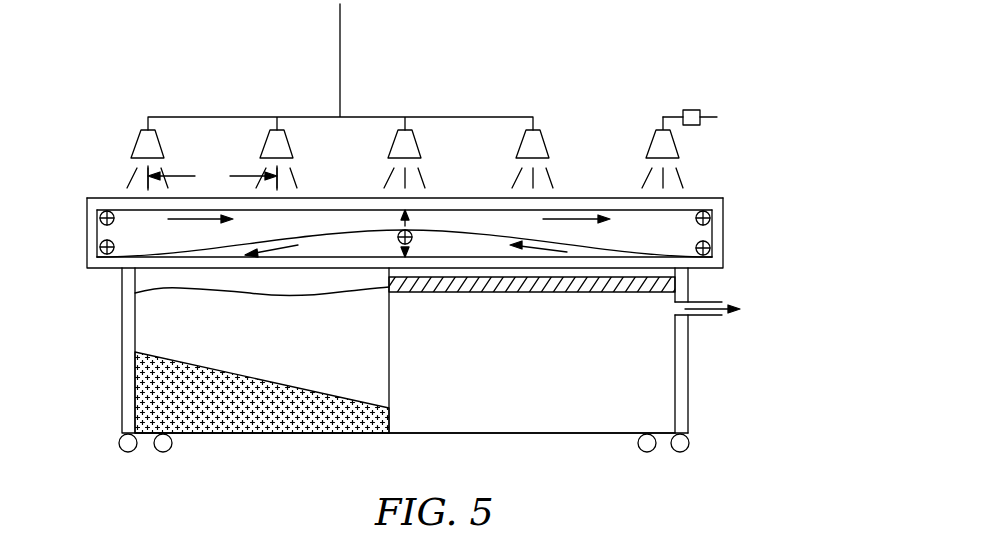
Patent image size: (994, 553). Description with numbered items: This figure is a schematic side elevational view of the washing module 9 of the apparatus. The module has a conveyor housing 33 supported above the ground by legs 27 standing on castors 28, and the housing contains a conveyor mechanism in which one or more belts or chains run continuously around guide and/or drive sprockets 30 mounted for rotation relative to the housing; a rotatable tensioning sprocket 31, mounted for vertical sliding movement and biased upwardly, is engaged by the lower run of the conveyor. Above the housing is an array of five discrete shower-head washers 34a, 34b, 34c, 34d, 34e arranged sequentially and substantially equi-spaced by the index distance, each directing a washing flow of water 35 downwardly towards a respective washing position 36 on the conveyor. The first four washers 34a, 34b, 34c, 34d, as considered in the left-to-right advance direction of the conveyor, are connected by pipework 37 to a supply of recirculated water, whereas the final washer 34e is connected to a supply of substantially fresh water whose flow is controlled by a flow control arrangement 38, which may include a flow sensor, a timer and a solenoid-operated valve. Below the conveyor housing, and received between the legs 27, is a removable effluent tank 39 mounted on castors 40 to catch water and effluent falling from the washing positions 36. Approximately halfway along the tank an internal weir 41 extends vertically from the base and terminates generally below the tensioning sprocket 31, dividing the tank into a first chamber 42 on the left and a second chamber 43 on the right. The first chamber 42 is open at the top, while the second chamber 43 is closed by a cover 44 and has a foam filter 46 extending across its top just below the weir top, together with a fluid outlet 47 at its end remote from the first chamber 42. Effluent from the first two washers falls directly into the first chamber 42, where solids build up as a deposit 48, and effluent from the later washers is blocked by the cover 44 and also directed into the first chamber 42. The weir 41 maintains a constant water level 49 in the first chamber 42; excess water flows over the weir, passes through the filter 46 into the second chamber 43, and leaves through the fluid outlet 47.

The washing module 9 is at (632, 58).
The legs 27 is at (688, 348).
The castors 28 is at (118, 450).
The guide and/or drive sprockets 30 is at (710, 218).
The tensioning sprocket 31 is at (410, 243).
The belt housing 33 is at (725, 242).
The first washer 34a is at (143, 143).
The second washer 34b is at (270, 148).
The third washer 34c is at (397, 148).
The fourth washer 34d is at (525, 148).
The final washer 34e is at (655, 148).
The washing flow of water 35 is at (131, 180).
The washing position 36 is at (678, 195).
The pipework 37 is at (307, 117).
The flow control arrangement 38 is at (700, 110).
The effluent tank 39 is at (367, 433).
The castors 40 is at (155, 453).
The internal weir 41 is at (392, 350).
The first chamber 42 is at (262, 377).
The second chamber 43 is at (532, 384).
The cover 44 is at (655, 263).
The filter 46 is at (617, 283).
The fluid outlet 47 is at (720, 301).
The deposit 48 is at (263, 413).
The water level 49 is at (168, 291).